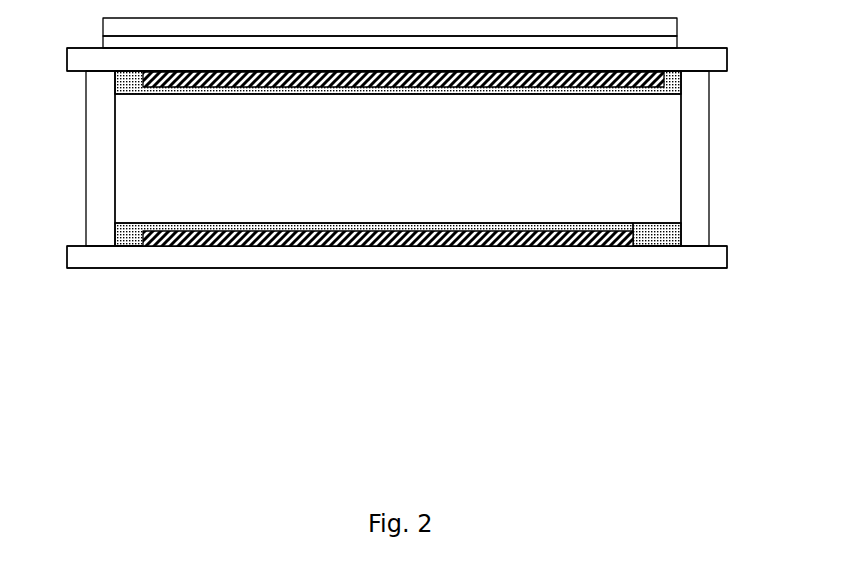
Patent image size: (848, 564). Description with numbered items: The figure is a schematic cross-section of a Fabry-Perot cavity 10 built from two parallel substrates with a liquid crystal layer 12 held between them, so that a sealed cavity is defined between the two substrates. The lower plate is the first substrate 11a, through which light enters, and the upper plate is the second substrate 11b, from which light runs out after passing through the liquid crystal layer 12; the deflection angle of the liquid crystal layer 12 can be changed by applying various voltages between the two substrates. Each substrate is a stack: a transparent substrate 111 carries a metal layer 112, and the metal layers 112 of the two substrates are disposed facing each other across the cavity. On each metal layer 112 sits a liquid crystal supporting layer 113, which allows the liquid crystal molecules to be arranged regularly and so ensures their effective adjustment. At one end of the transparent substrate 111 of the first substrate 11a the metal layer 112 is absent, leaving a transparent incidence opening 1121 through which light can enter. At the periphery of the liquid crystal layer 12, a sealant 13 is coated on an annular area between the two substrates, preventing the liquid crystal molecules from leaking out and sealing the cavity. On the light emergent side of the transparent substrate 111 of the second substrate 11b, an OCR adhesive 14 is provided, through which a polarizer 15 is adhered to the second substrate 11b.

The Fabry-Perot cavity 10 is at (60, 22).
The first substrate 11a is at (697, 318).
The second substrate 11b is at (782, 53).
The transparent substrate 111 is at (703, 61).
The metal layer 112 is at (631, 80).
The transparent incidence opening 1121 is at (647, 256).
The liquid crystal supporting layer 113 is at (680, 89).
The liquid crystal layer 12 is at (655, 153).
The sealant 13 is at (93, 190).
The OCR adhesive 14 is at (685, 44).
The polarizer 15 is at (685, 25).